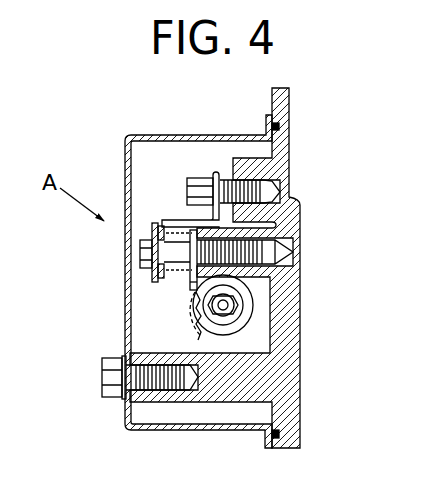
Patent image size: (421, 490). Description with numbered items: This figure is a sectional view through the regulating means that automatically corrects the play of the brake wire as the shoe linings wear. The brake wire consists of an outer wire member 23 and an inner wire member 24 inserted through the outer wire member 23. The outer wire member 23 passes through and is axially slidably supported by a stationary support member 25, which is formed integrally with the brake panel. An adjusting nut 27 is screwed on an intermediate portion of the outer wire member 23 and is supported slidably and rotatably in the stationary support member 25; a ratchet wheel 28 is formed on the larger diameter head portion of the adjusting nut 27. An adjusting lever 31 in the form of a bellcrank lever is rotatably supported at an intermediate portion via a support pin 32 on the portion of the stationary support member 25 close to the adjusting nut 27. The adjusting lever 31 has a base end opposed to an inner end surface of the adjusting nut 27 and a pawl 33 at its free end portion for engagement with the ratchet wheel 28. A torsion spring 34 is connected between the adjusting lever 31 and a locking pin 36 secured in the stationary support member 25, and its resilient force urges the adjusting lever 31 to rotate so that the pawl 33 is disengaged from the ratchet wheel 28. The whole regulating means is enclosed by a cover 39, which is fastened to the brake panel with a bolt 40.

The outer wire member 23 is at (232, 318).
The inner wire member 24 is at (232, 306).
The stationary support member 25 is at (291, 308).
The adjusting nut 27 is at (198, 336).
The ratchet wheel 28 is at (195, 318).
The adjusting lever 31 is at (183, 222).
The support pin 32 is at (140, 258).
The pawl 33 is at (189, 284).
The torsion spring 34 is at (162, 224).
The locking pin 36 is at (201, 186).
The cover 39 is at (198, 135).
The bolt 40 is at (100, 378).